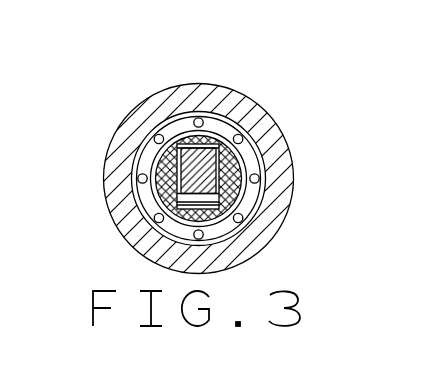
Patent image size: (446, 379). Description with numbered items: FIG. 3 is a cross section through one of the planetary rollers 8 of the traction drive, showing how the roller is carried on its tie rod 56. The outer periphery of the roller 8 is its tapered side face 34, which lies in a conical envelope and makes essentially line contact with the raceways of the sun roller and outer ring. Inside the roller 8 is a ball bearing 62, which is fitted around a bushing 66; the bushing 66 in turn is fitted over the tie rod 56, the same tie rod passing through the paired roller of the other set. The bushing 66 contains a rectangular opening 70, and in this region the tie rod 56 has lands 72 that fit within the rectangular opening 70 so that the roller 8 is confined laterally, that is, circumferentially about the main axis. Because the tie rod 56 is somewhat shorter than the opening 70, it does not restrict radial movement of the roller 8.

The planetary roller 8 is at (270, 230).
The tapered side face 34 is at (207, 83).
The tie rod 56 is at (153, 243).
The ball bearing 62 is at (247, 97).
The bushing 66 is at (232, 181).
The rectangular opening 70 is at (176, 165).
The land 72 is at (243, 139).